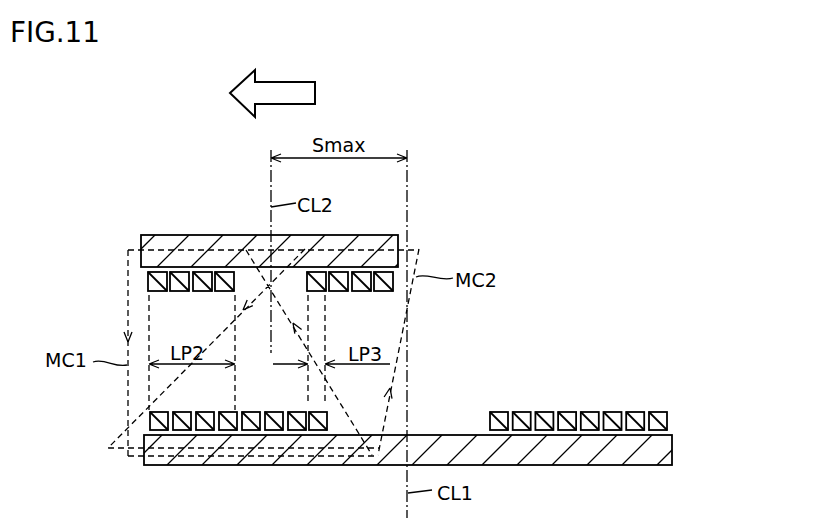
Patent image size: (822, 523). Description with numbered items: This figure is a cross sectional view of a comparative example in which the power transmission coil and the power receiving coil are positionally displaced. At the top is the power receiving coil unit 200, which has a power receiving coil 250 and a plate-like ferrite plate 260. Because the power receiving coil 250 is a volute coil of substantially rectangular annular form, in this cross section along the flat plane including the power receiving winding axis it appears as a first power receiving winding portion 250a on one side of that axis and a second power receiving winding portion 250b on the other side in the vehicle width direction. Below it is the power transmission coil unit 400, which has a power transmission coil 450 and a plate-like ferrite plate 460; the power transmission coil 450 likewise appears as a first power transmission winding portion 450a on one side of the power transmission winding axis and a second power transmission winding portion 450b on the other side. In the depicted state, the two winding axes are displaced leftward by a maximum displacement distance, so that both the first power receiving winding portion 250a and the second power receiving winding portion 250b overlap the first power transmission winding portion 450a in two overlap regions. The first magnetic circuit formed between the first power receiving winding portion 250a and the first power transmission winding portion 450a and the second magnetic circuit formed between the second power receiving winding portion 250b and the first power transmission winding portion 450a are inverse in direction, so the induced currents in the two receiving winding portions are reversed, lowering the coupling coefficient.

The power receiving coil unit 200 is at (78, 235).
The ferrite plate 260 is at (141, 253).
The power receiving coil 250 is at (148, 282).
The first power receiving winding portion 250a is at (235, 297).
The second power receiving winding portion 250b is at (392, 297).
The power transmission coil unit 400 is at (737, 405).
The power transmission coil 450 is at (668, 421).
The first power transmission winding portion 450a is at (150, 410).
The second power transmission winding portion 450b is at (666, 410).
The ferrite plate 460 is at (652, 452).